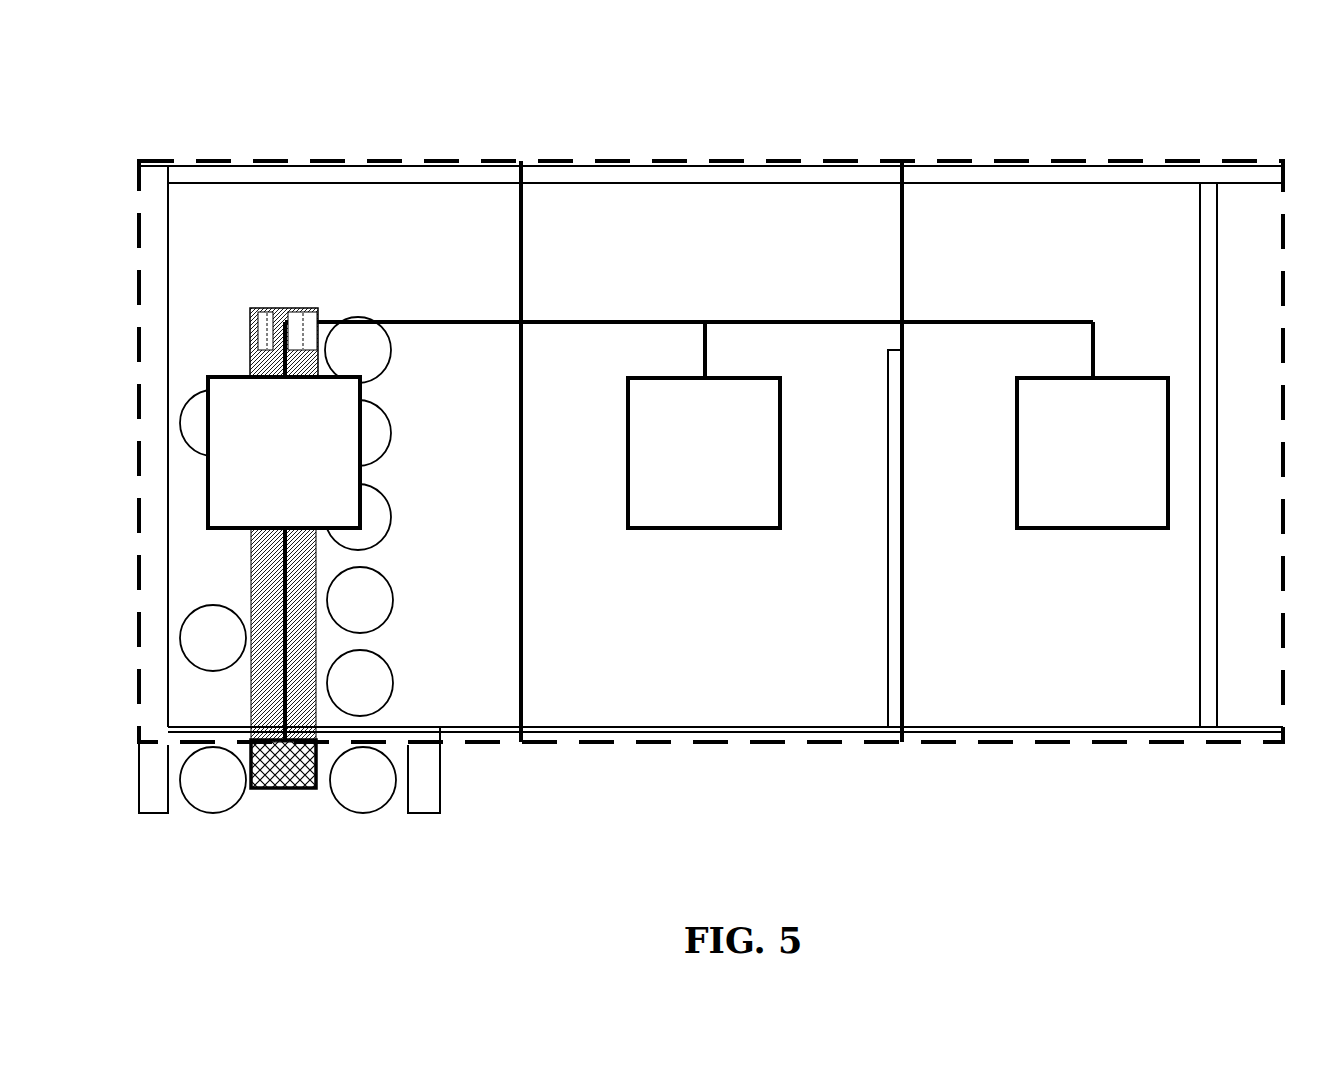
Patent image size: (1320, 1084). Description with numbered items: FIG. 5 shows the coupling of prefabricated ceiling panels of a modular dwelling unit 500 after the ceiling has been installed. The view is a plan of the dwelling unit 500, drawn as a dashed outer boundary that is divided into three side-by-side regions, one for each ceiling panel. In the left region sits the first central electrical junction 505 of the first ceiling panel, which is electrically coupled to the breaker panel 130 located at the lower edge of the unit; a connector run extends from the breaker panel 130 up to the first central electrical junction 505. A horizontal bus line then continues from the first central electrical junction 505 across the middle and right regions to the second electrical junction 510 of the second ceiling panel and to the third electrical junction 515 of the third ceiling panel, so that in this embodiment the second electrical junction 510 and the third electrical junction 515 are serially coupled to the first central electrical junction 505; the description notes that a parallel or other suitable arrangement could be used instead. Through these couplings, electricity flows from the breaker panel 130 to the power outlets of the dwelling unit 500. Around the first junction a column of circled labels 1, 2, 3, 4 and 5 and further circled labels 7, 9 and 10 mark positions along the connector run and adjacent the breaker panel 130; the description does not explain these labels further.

The modular dwelling unit 500 is at (232, 90).
The first central electrical junction 505 is at (284, 452).
The second electrical junction 510 is at (704, 453).
The third electrical junction 515 is at (1092, 453).
The breaker panel 130 is at (284, 790).
The port 1 is at (360, 683).
The port 2 is at (360, 600).
The port 3 is at (358, 517).
The port 4 is at (358, 433).
The port 5 is at (358, 350).
The port 7 is at (213, 638).
The port 9 is at (213, 780).
The port 10 is at (363, 780).